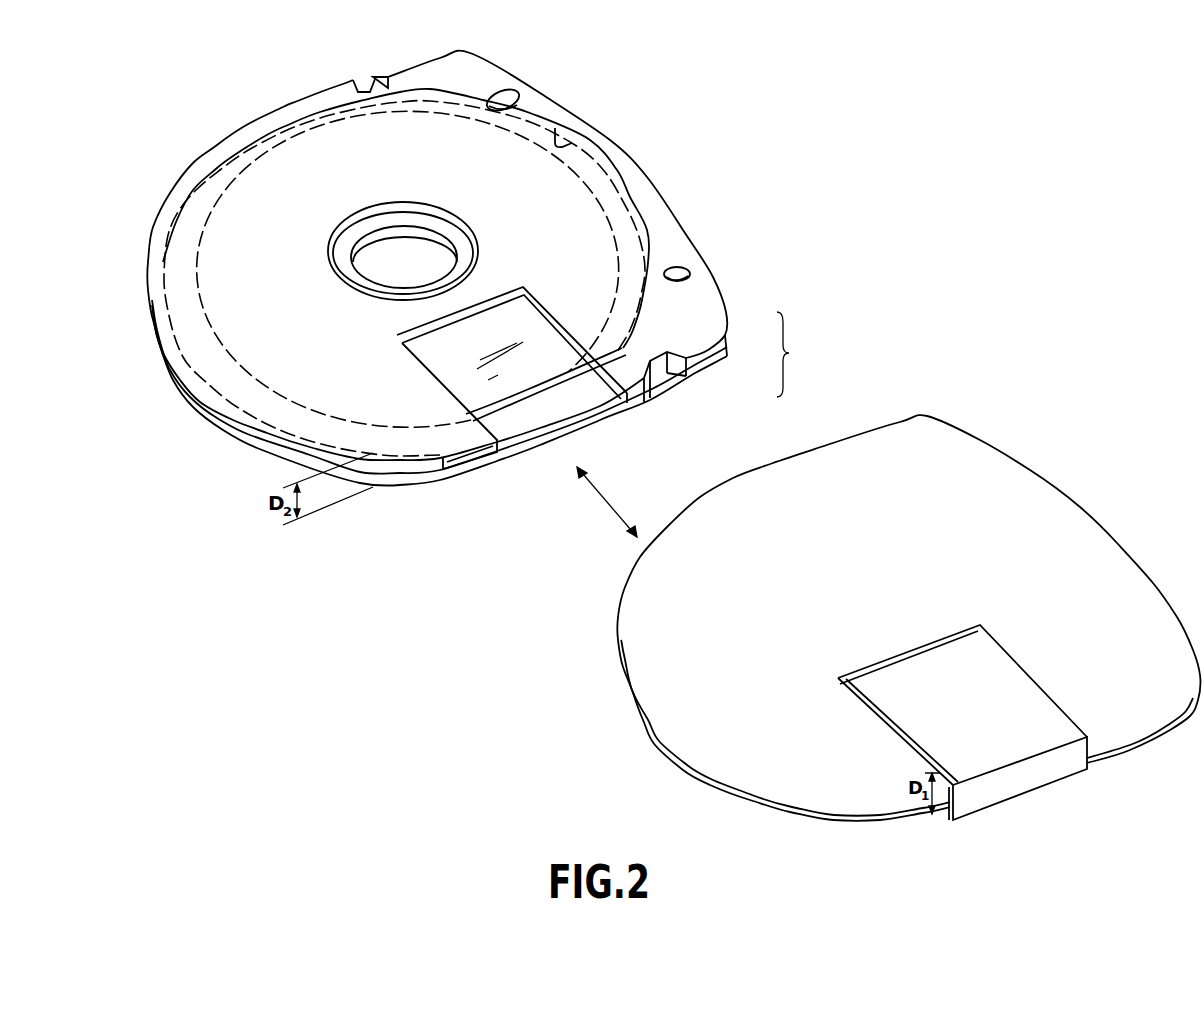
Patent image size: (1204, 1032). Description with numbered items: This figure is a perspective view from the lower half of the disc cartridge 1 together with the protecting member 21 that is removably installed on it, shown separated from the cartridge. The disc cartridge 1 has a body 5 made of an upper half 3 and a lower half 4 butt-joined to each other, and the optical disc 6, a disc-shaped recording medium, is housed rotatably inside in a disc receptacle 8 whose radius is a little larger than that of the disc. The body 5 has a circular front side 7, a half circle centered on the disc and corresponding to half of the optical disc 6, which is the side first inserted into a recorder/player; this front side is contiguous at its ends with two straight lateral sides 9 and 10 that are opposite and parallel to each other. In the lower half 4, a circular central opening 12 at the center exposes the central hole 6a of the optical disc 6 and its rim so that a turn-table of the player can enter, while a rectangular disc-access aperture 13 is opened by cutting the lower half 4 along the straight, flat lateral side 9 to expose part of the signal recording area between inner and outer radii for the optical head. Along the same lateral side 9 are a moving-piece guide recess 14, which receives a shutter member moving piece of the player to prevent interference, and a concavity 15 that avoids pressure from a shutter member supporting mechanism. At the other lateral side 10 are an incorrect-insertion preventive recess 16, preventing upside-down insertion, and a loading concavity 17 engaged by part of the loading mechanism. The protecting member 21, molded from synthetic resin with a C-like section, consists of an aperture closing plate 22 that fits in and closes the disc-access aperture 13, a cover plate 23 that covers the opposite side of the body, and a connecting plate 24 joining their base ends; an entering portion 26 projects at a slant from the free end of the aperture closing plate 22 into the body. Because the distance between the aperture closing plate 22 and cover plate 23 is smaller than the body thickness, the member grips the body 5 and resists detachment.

The disc cartridge 1 is at (687, 163).
The upper body half 3 is at (716, 364).
The lower body half 4 is at (718, 340).
The cartridge body 5 is at (815, 367).
The optical disc 6 is at (550, 410).
The central hole 6a is at (437, 243).
The circular front side 7 is at (237, 413).
The disc receptacle 8 is at (558, 127).
The lateral side 9 is at (541, 458).
The lateral side 10 is at (405, 69).
The central opening 12 is at (358, 228).
The disc-access aperture 13 is at (550, 312).
The moving-piece guide recess 14 is at (476, 458).
The concavity 15 is at (680, 369).
The incorrect-insertion preventive recess 16 is at (247, 140).
The loading concavity 17 is at (362, 87).
The protecting member 21 is at (1075, 523).
The aperture closing plate 22 is at (892, 722).
The cover plate 23 is at (667, 712).
The connecting plate 24 is at (1033, 777).
The entering portion 26 is at (848, 670).